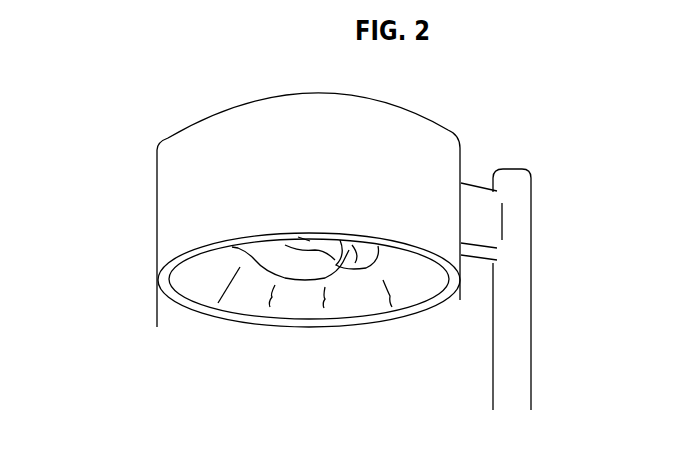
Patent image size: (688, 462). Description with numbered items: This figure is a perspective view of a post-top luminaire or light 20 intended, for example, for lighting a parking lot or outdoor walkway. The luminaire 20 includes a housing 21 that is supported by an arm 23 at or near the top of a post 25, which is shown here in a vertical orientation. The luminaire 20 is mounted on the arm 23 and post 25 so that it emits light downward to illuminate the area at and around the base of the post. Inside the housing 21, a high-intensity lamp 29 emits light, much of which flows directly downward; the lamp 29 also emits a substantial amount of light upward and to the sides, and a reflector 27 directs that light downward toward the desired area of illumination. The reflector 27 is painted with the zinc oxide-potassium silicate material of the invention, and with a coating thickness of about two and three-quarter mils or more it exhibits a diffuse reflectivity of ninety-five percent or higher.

The post-top luminaire 20 is at (118, 83).
The housing 21 is at (152, 254).
The arm 23 is at (475, 174).
The post 25 is at (538, 241).
The reflector 27 is at (342, 298).
The high-intensity lamp 29 is at (261, 276).